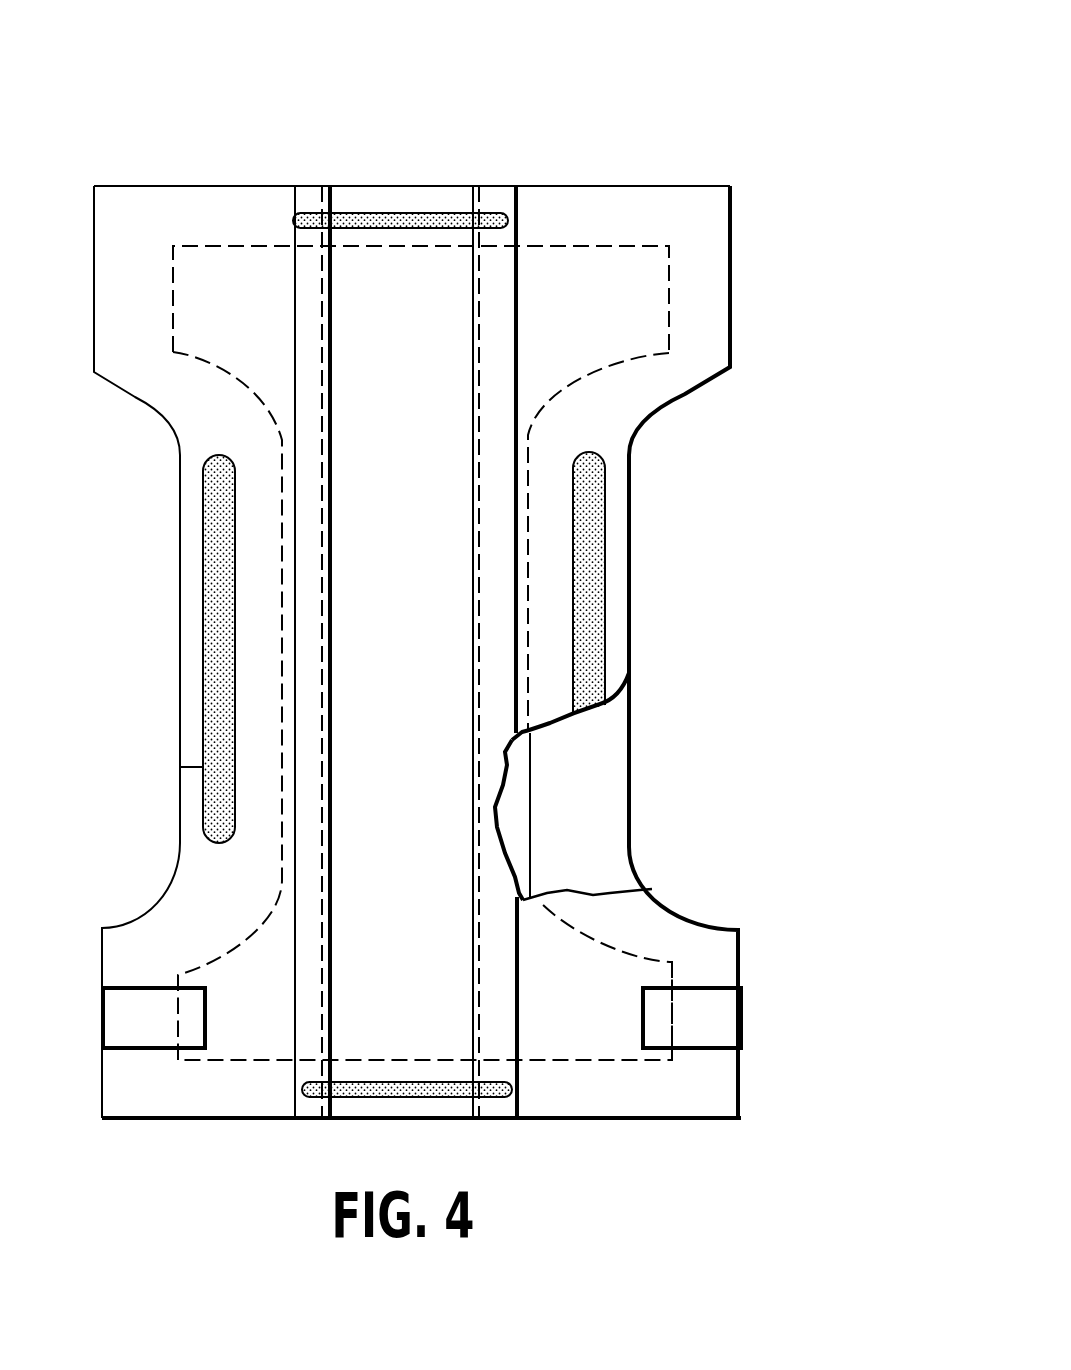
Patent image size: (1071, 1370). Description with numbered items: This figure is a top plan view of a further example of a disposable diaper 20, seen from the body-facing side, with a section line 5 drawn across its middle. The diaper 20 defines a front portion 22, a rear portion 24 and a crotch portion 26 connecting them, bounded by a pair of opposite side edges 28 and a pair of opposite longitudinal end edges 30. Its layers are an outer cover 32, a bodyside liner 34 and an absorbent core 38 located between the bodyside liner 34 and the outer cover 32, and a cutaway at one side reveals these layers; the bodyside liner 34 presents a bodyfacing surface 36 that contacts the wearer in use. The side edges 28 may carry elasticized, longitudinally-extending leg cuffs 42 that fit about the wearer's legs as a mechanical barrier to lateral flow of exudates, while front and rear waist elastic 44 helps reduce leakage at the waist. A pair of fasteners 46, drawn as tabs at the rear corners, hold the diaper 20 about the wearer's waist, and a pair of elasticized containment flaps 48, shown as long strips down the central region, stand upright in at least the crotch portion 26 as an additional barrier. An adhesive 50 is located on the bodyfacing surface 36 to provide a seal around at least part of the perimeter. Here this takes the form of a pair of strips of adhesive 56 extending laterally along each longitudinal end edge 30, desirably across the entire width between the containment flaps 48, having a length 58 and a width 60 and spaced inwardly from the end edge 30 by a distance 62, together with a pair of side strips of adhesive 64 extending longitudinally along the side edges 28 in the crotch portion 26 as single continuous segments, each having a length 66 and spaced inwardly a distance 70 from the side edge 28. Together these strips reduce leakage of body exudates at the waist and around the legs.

The diaper 20 is at (705, 58).
The front portion 22 is at (818, 294).
The rear portion 24 is at (818, 925).
The crotch portion 26 is at (803, 648).
The side edges 28 is at (632, 478).
The longitudinal end edges 30 is at (686, 186).
The outer cover 32 is at (613, 713).
The bodyside liner 34 is at (617, 890).
The bodyfacing surface 36 is at (128, 955).
The absorbent core 38 is at (533, 785).
The leg cuffs 42 is at (632, 640).
The waist elastic 44 is at (502, 195).
The fasteners 46 is at (152, 1048).
The containment flaps 48 is at (295, 1065).
The adhesive 50 is at (425, 1100).
The strips of adhesive 56 is at (405, 228).
The length 58 is at (508, 213).
The width 60 is at (285, 228).
The offset distance dimension 62 is at (610, 213).
The side strips of adhesive 64 is at (220, 453).
The length 66 is at (205, 843).
The distance 70 is at (193, 767).
The section line 5- 5 is at (248, 610).